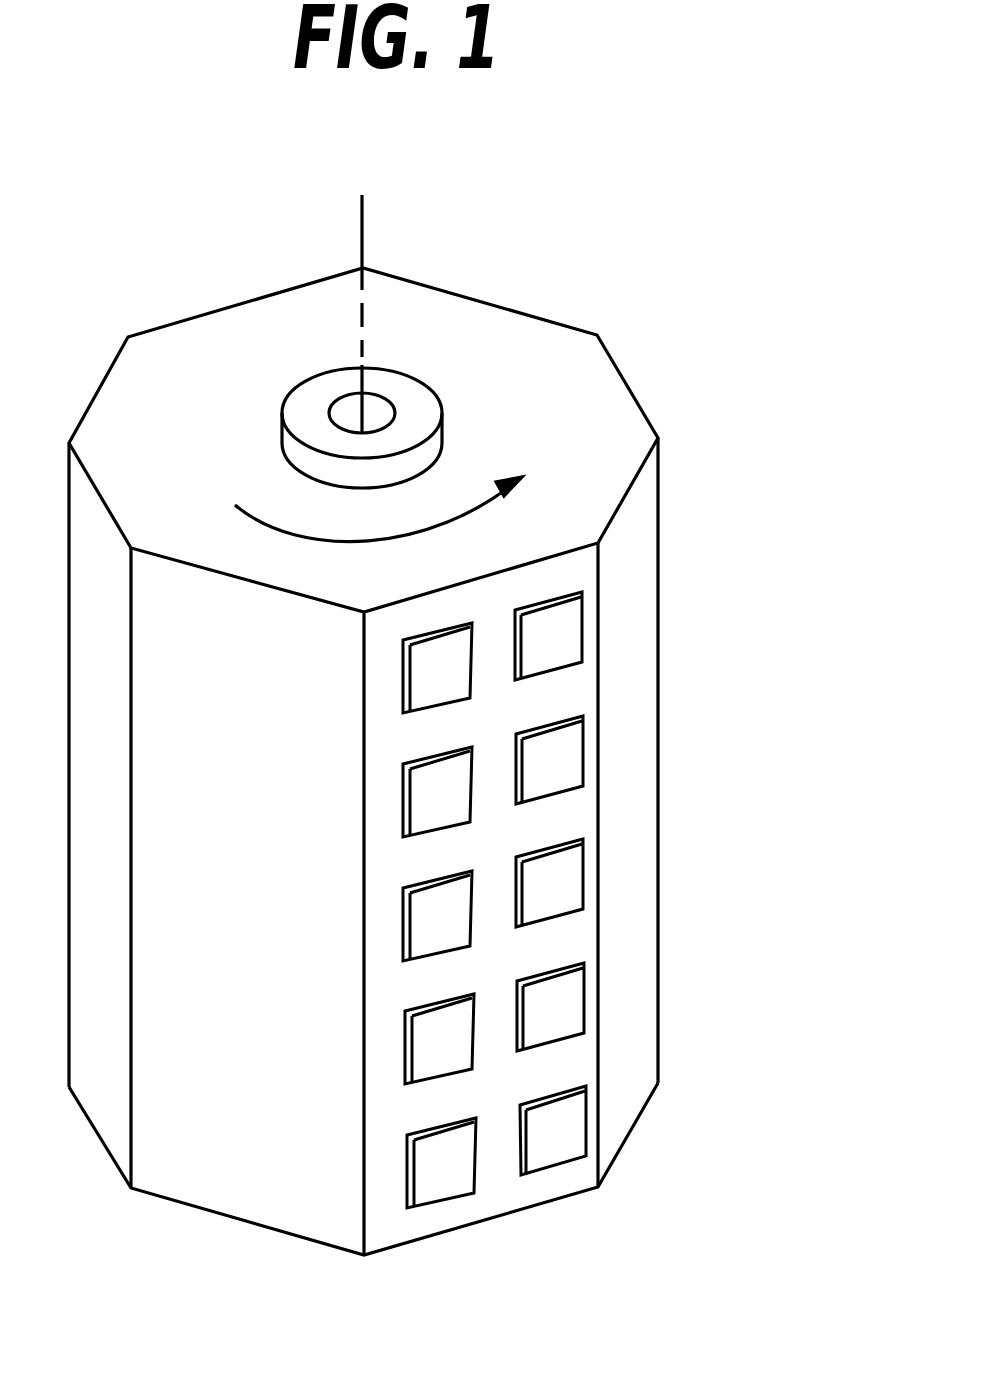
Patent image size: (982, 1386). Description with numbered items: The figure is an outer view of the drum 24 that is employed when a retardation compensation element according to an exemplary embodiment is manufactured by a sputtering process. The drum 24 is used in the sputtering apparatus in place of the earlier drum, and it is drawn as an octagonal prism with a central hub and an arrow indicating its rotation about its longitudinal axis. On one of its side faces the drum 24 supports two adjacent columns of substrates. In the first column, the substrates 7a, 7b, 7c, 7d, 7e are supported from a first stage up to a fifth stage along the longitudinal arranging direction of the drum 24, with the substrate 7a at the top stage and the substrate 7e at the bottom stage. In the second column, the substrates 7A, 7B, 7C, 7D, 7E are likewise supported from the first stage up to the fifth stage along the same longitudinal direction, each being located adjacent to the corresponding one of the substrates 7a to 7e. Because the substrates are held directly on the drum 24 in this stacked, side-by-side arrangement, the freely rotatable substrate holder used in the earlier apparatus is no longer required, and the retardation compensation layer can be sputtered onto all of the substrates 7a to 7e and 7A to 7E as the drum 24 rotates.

The drum 24 is at (612, 352).
The substrate 7A is at (427, 670).
The substrate 7B is at (427, 800).
The substrate 7C is at (427, 925).
The substrate 7D is at (435, 1050).
The substrate 7E is at (425, 1172).
The substrate 7a is at (570, 633).
The substrate 7b is at (572, 757).
The substrate 7c is at (572, 880).
The substrate 7d is at (572, 1005).
The substrate 7e is at (567, 1127).